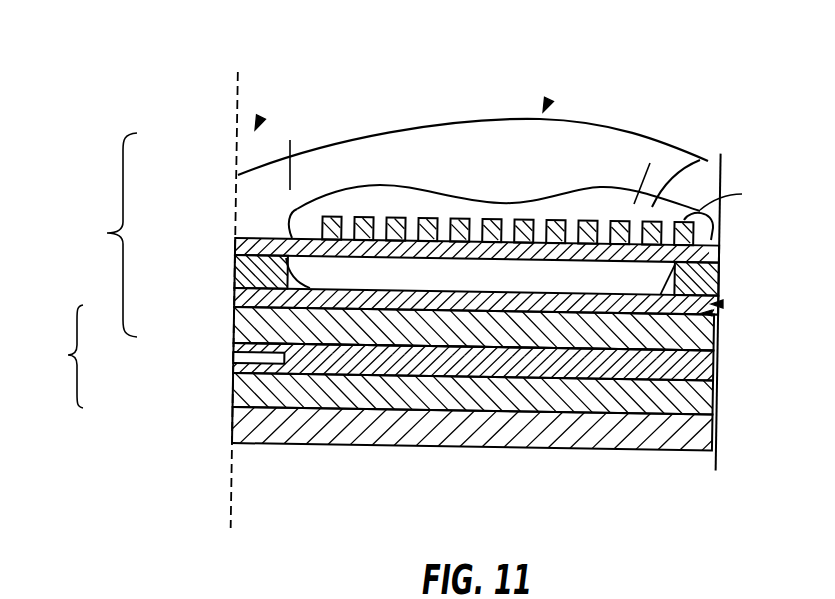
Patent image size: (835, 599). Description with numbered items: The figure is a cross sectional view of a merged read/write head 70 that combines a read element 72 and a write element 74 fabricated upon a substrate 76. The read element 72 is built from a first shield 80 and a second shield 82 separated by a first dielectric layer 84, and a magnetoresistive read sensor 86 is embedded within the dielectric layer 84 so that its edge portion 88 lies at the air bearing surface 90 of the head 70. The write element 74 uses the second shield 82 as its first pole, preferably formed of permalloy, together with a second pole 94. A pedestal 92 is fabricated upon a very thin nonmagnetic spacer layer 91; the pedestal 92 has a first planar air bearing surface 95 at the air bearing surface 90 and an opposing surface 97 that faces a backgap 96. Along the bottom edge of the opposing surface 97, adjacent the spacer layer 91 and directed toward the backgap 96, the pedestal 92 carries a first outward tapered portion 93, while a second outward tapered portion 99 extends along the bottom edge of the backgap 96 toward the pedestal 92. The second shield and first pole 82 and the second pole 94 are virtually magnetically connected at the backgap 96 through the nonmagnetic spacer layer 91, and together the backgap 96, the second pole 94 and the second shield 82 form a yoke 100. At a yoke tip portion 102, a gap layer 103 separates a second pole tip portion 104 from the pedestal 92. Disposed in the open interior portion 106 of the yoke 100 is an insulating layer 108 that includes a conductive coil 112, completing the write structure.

The merged read/write head 70 is at (686, 88).
The read element 72 is at (54, 356).
The write element 74 is at (100, 235).
The substrate 76 is at (708, 434).
The first shield 80 is at (708, 399).
The second shield 82 is at (707, 337).
The first dielectric layer 84 is at (708, 366).
The magnetoresistive read sensor 86 is at (233, 350).
The edge portion 88 is at (233, 362).
The air bearing surface 90 is at (238, 123).
The nonmagnetic spacer layer 91 is at (723, 304).
The pedestal 92 is at (236, 277).
The first outward tapered portion 93 is at (300, 263).
The second pole 94 is at (443, 150).
The first planar air bearing surface 95 is at (234, 288).
The backgap 96 is at (721, 281).
The opposing surface 97 is at (300, 222).
The second outward tapered portion 99 is at (672, 268).
The yoke 100 is at (546, 105).
The yoke tip portion 102 is at (257, 124).
The gap layer 103 is at (237, 250).
The second pole tip portion 104 is at (290, 140).
The open interior portion 106 is at (650, 163).
The insulating layer 108 is at (700, 158).
The conductive coil 112 is at (742, 194).